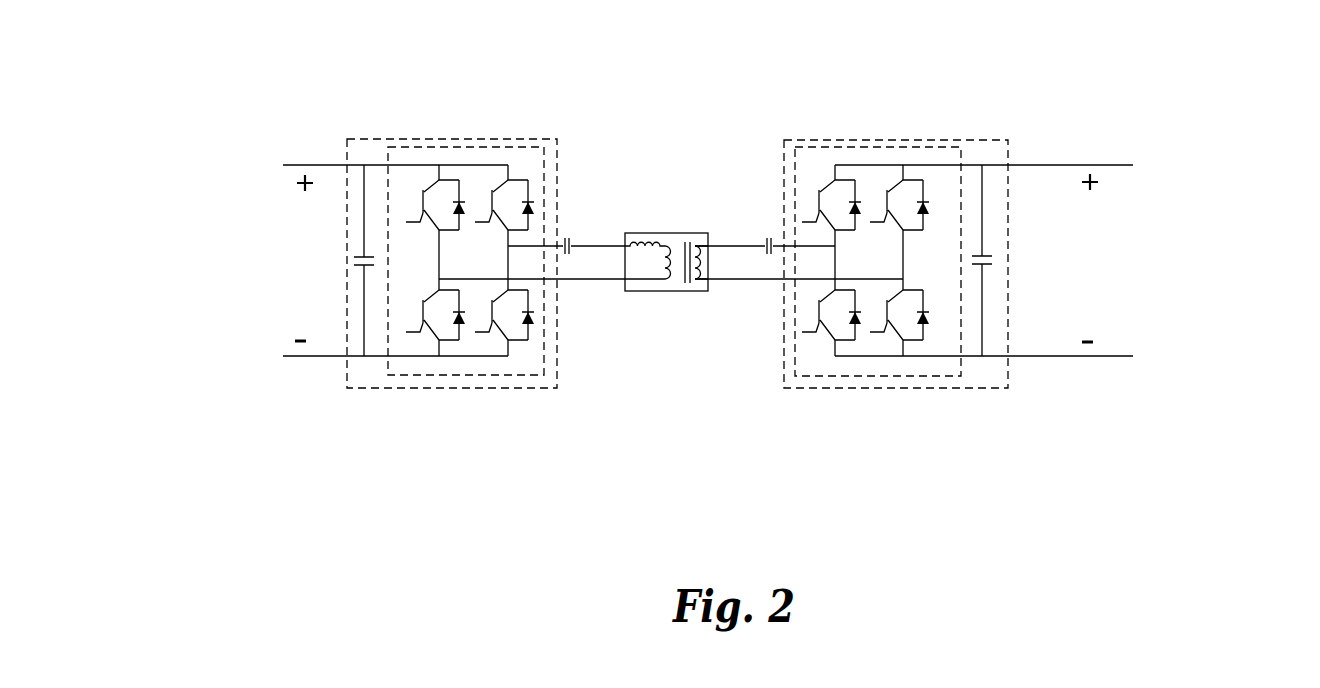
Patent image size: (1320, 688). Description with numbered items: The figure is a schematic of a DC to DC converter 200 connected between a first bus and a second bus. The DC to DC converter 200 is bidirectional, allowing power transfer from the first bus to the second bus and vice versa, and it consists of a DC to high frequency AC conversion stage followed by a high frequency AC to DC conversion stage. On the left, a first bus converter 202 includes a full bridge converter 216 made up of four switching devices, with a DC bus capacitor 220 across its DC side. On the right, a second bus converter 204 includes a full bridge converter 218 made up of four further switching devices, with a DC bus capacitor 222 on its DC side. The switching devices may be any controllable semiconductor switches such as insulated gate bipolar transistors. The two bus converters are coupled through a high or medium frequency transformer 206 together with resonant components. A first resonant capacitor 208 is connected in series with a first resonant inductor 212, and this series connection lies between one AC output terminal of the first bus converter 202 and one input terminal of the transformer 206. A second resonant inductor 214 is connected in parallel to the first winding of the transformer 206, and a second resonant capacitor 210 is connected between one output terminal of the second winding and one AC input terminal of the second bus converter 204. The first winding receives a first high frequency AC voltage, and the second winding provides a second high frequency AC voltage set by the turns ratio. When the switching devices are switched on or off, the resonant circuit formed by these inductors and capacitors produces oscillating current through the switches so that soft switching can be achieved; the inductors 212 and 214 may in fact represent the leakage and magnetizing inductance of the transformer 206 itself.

The DC to DC converter 200 is at (344, 98).
The first bus converter 202 is at (457, 124).
The second bus converter 204 is at (881, 122).
The transformer 206 is at (667, 232).
The first resonant capacitor 208 is at (567, 228).
The second resonant capacitor 210 is at (769, 241).
The first resonant inductor 212 is at (638, 243).
The second resonant inductor 214 is at (666, 272).
The full bridge converter 216 is at (472, 376).
The full bridge converter 218 is at (883, 377).
The DC bus capacitor 220 is at (357, 255).
The DC bus capacitor 222 is at (992, 253).